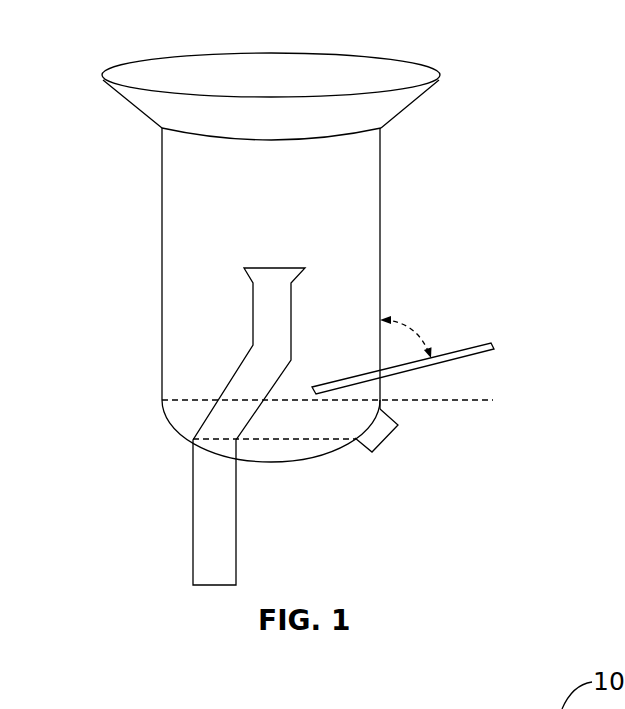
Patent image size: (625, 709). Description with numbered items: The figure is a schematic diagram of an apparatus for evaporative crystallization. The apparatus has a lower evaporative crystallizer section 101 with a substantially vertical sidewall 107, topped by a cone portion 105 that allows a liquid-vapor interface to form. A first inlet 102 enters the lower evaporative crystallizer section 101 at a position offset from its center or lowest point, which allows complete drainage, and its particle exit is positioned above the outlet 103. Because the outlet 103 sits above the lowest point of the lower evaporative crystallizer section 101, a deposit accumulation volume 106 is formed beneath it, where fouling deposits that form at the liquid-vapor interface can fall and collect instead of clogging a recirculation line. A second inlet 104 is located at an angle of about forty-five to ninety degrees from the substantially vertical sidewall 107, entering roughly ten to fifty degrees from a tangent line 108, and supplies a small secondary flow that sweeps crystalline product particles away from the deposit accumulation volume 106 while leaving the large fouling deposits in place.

The lower evaporative crystallizer section 101 is at (161, 267).
The first inlet 102 is at (252, 297).
The outlet 103 is at (388, 442).
The second inlet 104 is at (458, 347).
The cone portion 105 is at (136, 105).
The deposit accumulation volume 106 is at (267, 450).
The substantially vertical sidewall 107 is at (381, 300).
The tangent line 108 is at (463, 401).